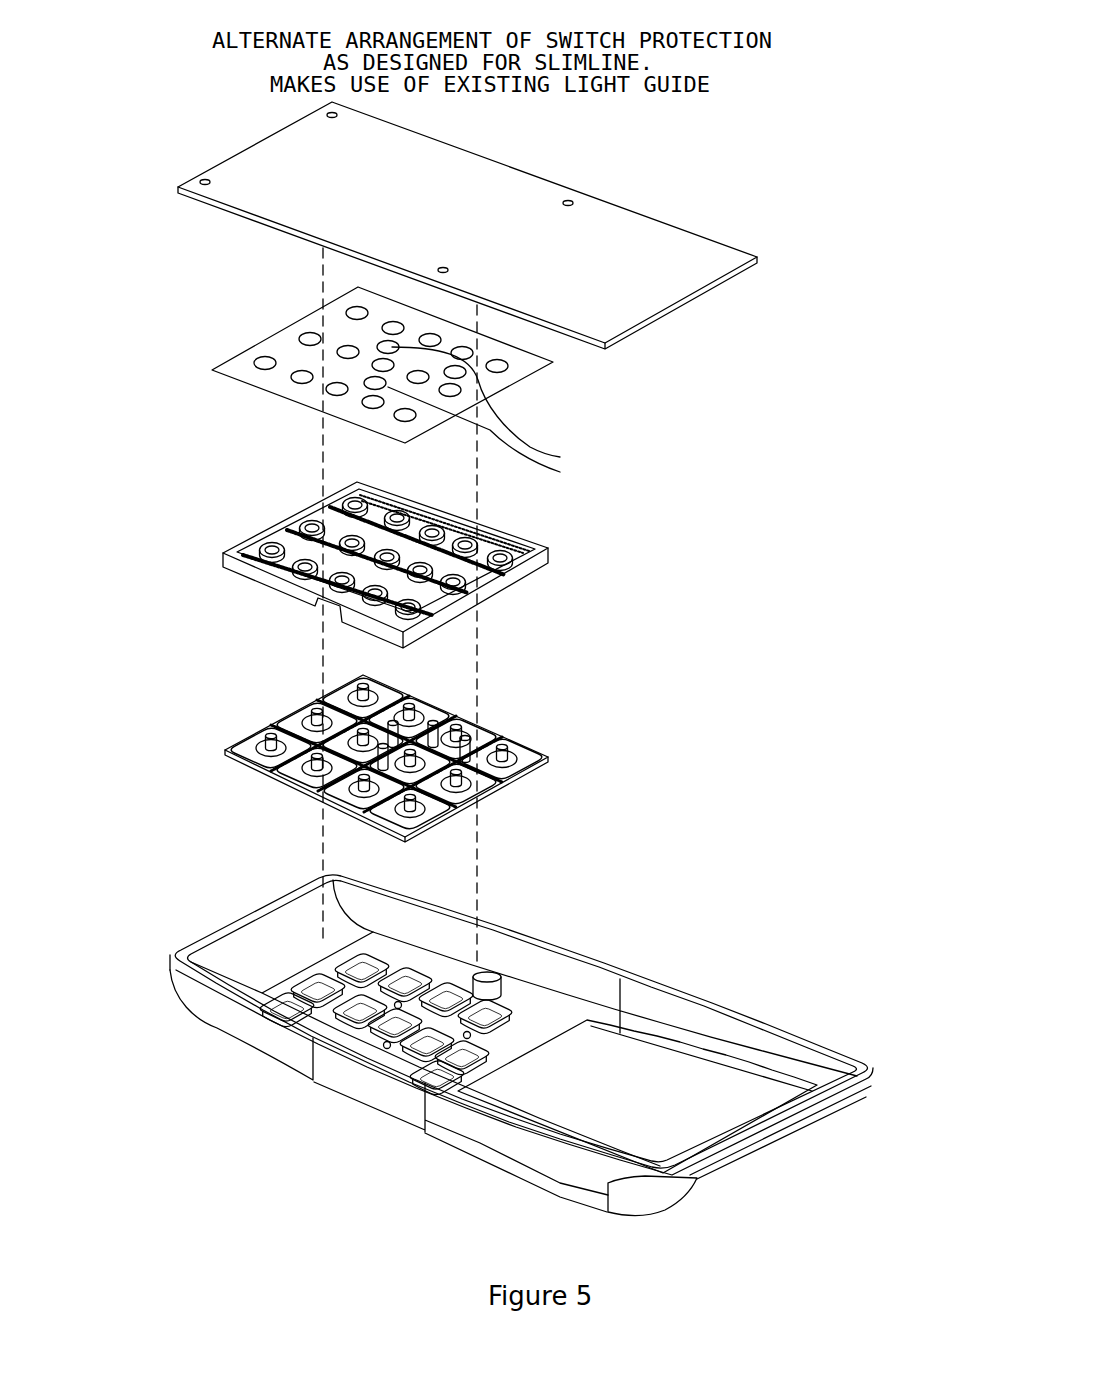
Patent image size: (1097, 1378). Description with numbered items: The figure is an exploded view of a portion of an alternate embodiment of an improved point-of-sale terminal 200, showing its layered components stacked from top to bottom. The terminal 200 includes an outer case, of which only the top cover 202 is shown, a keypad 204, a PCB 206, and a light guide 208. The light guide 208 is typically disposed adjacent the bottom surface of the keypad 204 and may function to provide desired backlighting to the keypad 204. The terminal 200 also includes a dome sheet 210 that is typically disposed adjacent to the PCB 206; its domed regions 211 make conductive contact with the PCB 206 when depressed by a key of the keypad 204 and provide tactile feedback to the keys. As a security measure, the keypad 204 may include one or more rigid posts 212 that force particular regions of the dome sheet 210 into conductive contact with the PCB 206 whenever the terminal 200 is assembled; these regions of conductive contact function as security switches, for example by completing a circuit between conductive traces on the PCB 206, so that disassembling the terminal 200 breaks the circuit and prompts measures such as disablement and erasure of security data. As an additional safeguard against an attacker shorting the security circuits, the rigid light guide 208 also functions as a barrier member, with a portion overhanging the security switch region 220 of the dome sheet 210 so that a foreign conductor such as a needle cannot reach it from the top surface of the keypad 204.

The POS terminal 200 is at (128, 132).
The top cover 202 is at (676, 984).
The keypad 204 is at (527, 772).
The PCB 206 is at (704, 230).
The light guide 208 is at (532, 538).
The dome sheet 210 is at (537, 375).
The domed regions 211 is at (255, 357).
The rigid posts 212 is at (398, 730).
The security switch region 220 is at (505, 410).